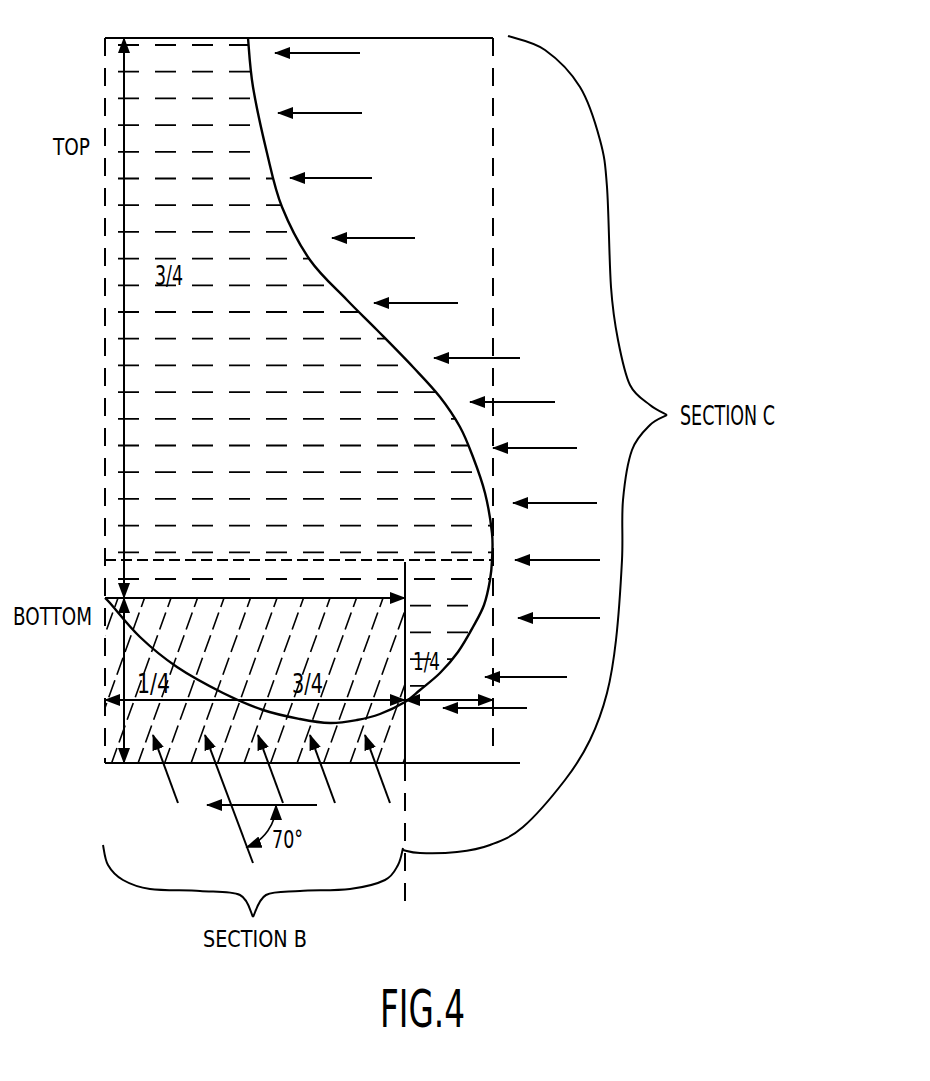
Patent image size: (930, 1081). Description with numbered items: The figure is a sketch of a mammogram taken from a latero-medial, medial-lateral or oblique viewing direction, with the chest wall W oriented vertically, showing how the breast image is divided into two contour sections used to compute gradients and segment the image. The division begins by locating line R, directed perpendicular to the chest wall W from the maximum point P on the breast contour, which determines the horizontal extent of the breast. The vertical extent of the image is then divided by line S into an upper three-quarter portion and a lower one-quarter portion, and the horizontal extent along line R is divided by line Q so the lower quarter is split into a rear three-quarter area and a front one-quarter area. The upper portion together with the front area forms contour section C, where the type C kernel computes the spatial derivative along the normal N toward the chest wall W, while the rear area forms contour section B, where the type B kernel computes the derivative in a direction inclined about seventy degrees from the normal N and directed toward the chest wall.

The contour section C is at (367, 178).
The chest wall W is at (115, 253).
The line R is at (175, 560).
The line S is at (247, 598).
The maximum point P is at (495, 558).
The line Q is at (407, 627).
The contour section B is at (170, 786).
The normal to chest wall N is at (262, 826).